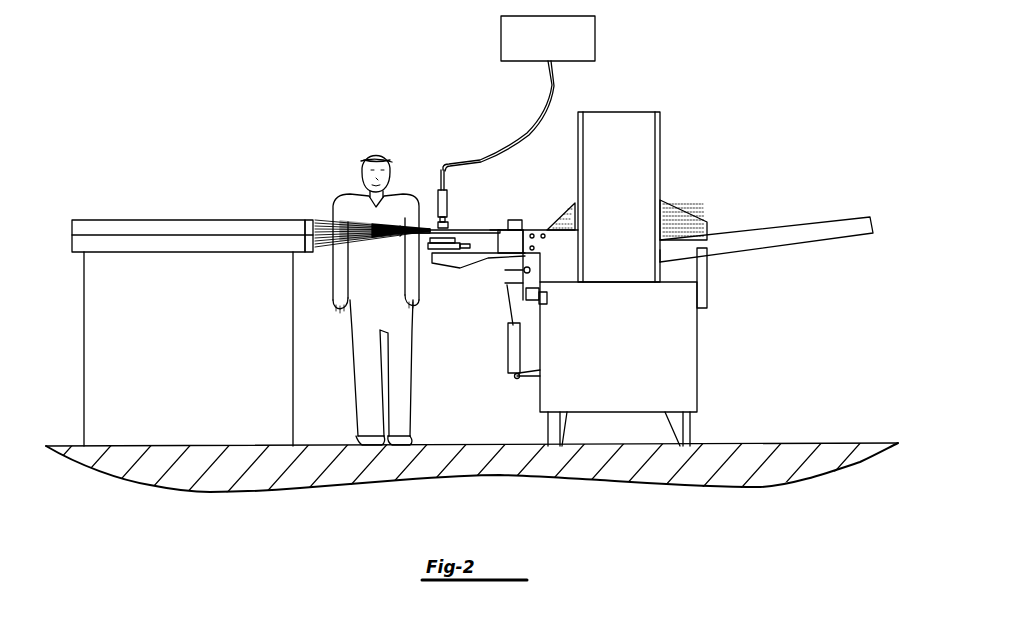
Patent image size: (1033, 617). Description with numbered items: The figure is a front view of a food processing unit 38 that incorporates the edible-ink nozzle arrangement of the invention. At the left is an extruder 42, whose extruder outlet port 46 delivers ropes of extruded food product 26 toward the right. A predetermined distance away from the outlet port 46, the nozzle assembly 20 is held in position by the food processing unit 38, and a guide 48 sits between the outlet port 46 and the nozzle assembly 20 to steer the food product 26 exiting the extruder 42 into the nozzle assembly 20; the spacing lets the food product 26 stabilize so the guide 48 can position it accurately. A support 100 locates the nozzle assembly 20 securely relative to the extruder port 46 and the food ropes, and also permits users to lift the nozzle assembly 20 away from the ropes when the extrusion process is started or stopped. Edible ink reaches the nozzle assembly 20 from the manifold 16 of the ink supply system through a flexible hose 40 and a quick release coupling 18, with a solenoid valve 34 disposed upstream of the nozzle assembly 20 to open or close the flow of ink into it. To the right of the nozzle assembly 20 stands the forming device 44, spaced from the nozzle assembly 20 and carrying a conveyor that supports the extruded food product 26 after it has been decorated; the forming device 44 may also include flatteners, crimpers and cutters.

The manifold 16 is at (608, 40).
The quick release coupling 18 is at (473, 199).
The nozzle assembly 20 is at (475, 219).
The extruded food product 26 is at (322, 222).
The solenoid valve 34 is at (466, 184).
The food processing unit 38 is at (176, 156).
The hose 40 is at (520, 127).
The extruder 42 is at (160, 230).
The forming device 44 is at (636, 150).
The extruder outlet port 46 is at (310, 224).
The guide 48 is at (405, 234).
The support 100 is at (476, 262).